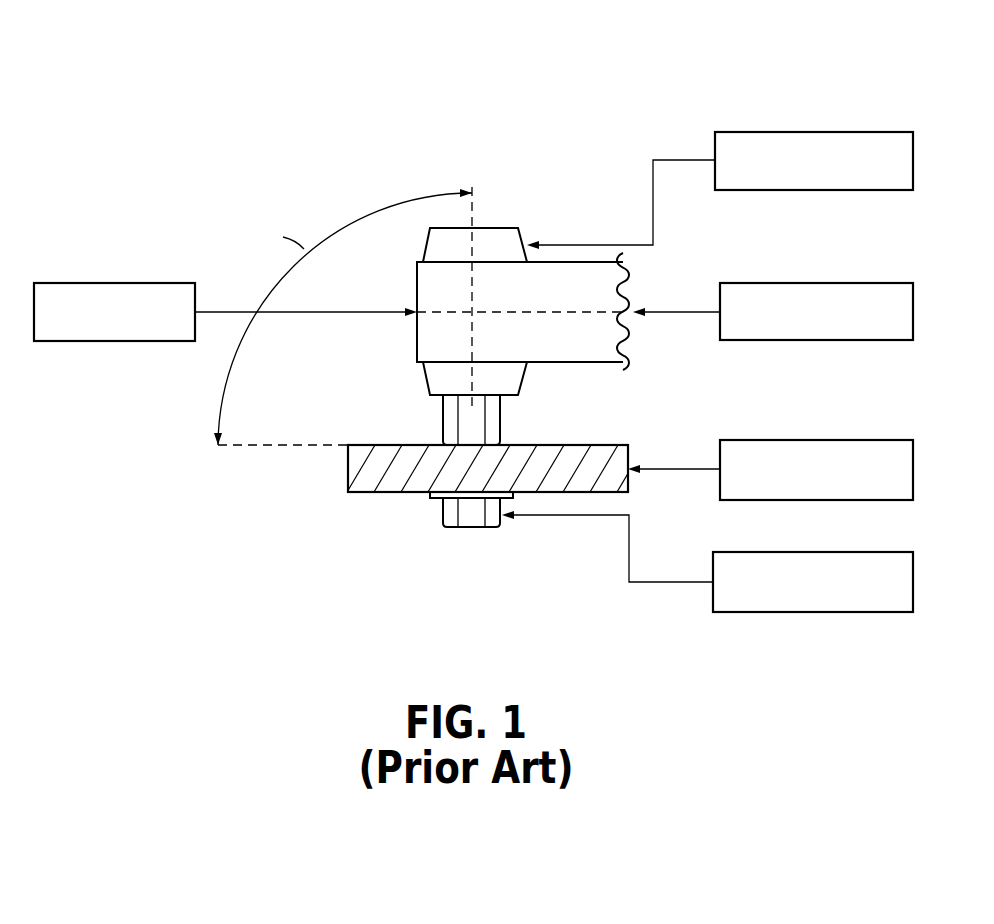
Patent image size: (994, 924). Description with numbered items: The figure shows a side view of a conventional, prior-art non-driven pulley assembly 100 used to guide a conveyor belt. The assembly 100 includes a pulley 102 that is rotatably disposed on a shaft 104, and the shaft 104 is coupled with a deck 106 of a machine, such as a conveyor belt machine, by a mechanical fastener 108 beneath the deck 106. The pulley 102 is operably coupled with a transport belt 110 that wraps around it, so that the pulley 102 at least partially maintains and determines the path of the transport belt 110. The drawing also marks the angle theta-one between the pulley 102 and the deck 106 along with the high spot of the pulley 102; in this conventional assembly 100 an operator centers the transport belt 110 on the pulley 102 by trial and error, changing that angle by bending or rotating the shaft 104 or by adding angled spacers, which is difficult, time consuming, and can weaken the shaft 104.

The non-driven pulley assembly 100 is at (158, 70).
The pulley 102 is at (412, 243).
The shaft 104 is at (458, 412).
The deck 106 is at (573, 445).
The mechanical fastener 108 is at (432, 516).
The transport belt 110 is at (627, 332).